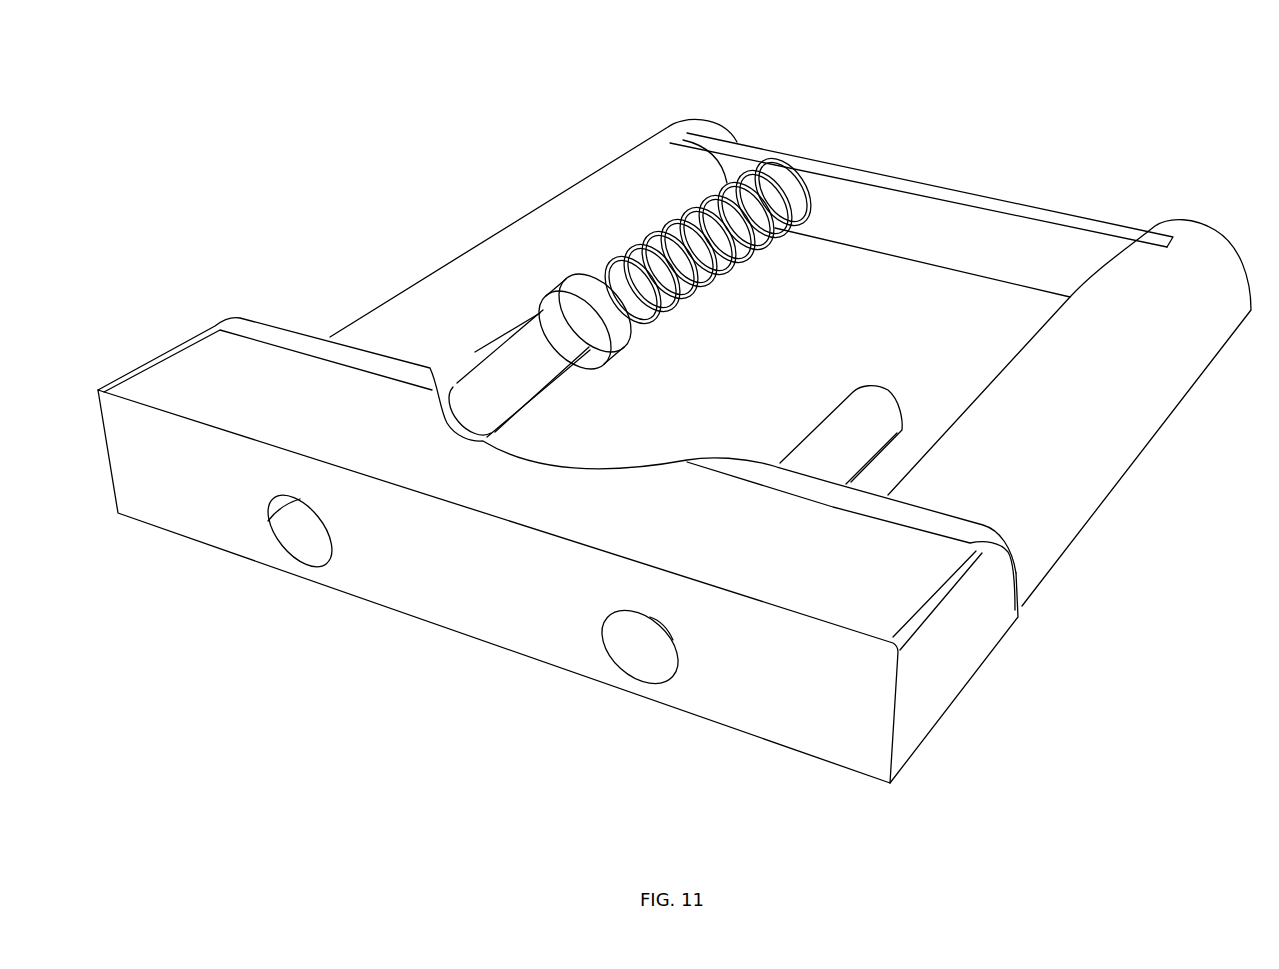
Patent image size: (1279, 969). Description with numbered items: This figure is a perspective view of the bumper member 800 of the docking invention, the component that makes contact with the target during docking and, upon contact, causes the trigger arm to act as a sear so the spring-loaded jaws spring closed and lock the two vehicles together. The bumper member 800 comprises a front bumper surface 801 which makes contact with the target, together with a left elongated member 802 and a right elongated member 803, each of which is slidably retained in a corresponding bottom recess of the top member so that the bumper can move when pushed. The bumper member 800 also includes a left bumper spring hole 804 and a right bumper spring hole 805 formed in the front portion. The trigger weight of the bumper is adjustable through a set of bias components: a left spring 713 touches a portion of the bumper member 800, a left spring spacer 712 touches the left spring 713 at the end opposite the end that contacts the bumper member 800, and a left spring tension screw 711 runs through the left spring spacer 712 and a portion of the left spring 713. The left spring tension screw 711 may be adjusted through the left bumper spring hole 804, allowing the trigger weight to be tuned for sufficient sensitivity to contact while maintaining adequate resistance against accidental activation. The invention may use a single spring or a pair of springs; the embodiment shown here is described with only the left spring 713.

The bumper member 800 is at (139, 74).
The front bumper surface 801 is at (462, 580).
The left elongated member 802 is at (540, 236).
The right elongated member 803 is at (1163, 297).
The left bumper spring hole 804 is at (300, 535).
The right bumper spring hole 805 is at (647, 642).
The left spring tension screw 711 is at (523, 371).
The left spring spacer 712 is at (611, 311).
The left spring 713 is at (747, 175).